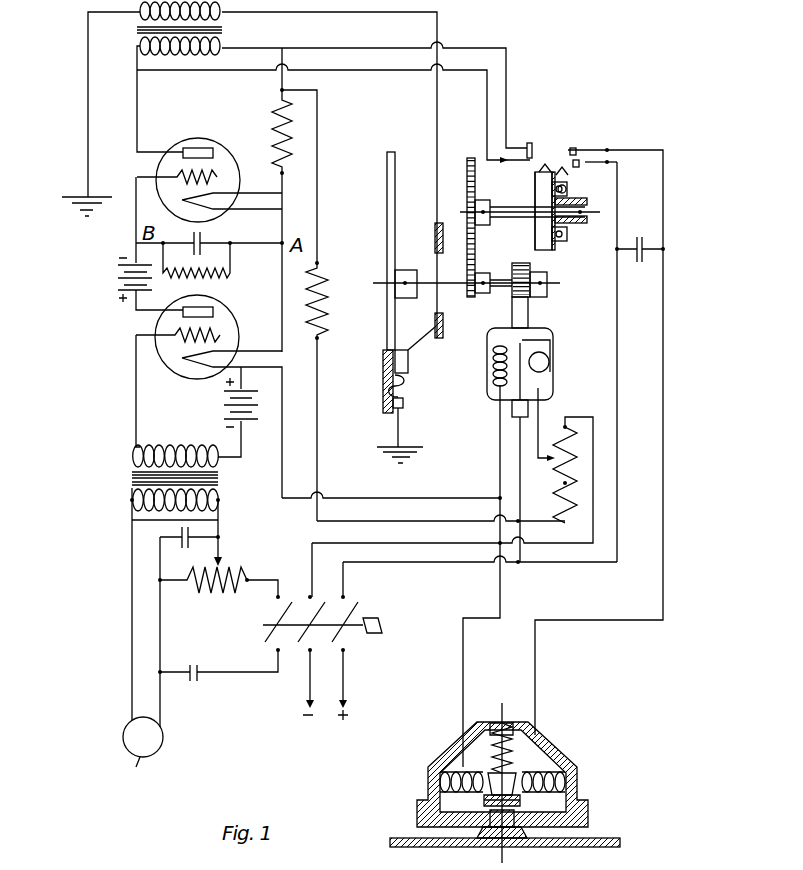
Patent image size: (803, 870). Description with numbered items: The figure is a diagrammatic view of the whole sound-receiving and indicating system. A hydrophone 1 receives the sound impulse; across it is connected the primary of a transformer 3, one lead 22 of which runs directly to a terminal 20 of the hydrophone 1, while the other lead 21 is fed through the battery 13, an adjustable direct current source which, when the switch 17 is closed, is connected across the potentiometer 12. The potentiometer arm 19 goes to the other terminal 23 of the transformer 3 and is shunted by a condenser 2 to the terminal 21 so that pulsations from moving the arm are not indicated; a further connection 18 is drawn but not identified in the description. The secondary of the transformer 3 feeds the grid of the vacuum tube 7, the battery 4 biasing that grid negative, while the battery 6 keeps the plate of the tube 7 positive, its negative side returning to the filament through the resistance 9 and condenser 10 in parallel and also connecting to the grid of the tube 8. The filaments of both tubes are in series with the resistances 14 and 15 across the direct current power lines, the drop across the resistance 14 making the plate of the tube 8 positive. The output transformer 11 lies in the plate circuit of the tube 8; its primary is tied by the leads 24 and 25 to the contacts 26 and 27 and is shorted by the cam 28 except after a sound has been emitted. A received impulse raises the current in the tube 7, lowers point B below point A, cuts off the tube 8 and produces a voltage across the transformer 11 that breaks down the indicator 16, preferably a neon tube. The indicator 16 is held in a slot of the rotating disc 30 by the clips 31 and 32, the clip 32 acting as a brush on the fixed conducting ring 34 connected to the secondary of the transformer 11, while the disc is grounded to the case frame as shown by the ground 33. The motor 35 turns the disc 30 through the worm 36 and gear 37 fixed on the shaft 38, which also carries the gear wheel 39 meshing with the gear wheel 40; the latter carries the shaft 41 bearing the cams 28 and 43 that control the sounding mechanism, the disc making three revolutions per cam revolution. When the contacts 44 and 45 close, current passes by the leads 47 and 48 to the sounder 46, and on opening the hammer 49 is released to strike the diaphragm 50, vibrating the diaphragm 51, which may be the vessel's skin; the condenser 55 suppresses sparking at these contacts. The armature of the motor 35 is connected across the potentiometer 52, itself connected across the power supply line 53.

The hydrophone 1 is at (123, 740).
The condenser 2 is at (178, 538).
The transformer 3 is at (130, 480).
The battery 4 is at (220, 402).
The battery 6 is at (113, 275).
The vacuum tube 7 is at (155, 345).
The vacuum tube 8 is at (157, 165).
The resistance 9 is at (207, 278).
The condenser 10 is at (193, 235).
The transformer 11 is at (137, 30).
The potentiometer 12 is at (197, 587).
The battery 13 is at (185, 672).
The resistance 14 is at (263, 120).
The resistance 15 is at (325, 277).
The indicator 16 is at (400, 390).
The switch 17 is at (382, 622).
The conductor 18 is at (133, 225).
The potentiometer arm 19 is at (215, 553).
The terminal 20 is at (130, 690).
The lead 21 is at (158, 702).
The lead 22 is at (130, 517).
The terminal 23 is at (132, 525).
The lead 24 is at (463, 70).
The lead 25 is at (497, 50).
The contact 26 is at (541, 172).
The contact 27 is at (521, 150).
The cam 28 is at (535, 185).
The rotating disc 30 is at (387, 203).
The clip 31 is at (403, 407).
The clip 32 is at (408, 365).
The ground 33 is at (422, 453).
The conducting ring 34 is at (435, 228).
The motor 35 is at (555, 347).
The worm 36 is at (547, 289).
The gear 37 is at (547, 275).
The shaft 38 is at (502, 292).
The gear wheel 39 is at (486, 273).
The gear wheel 40 is at (470, 157).
The shaft 41 is at (520, 214).
The cam 43 is at (575, 188).
The contact 44 is at (585, 165).
The contact 45 is at (587, 147).
The sounder 46 is at (573, 778).
The lead 47 is at (618, 177).
The lead 48 is at (665, 152).
The hammer 49 is at (520, 798).
The diaphragm 50 is at (588, 818).
The diaphragm 51 is at (620, 842).
The potentiometer 52 is at (550, 460).
The power supply line 53 is at (327, 722).
The condenser 55 is at (645, 253).